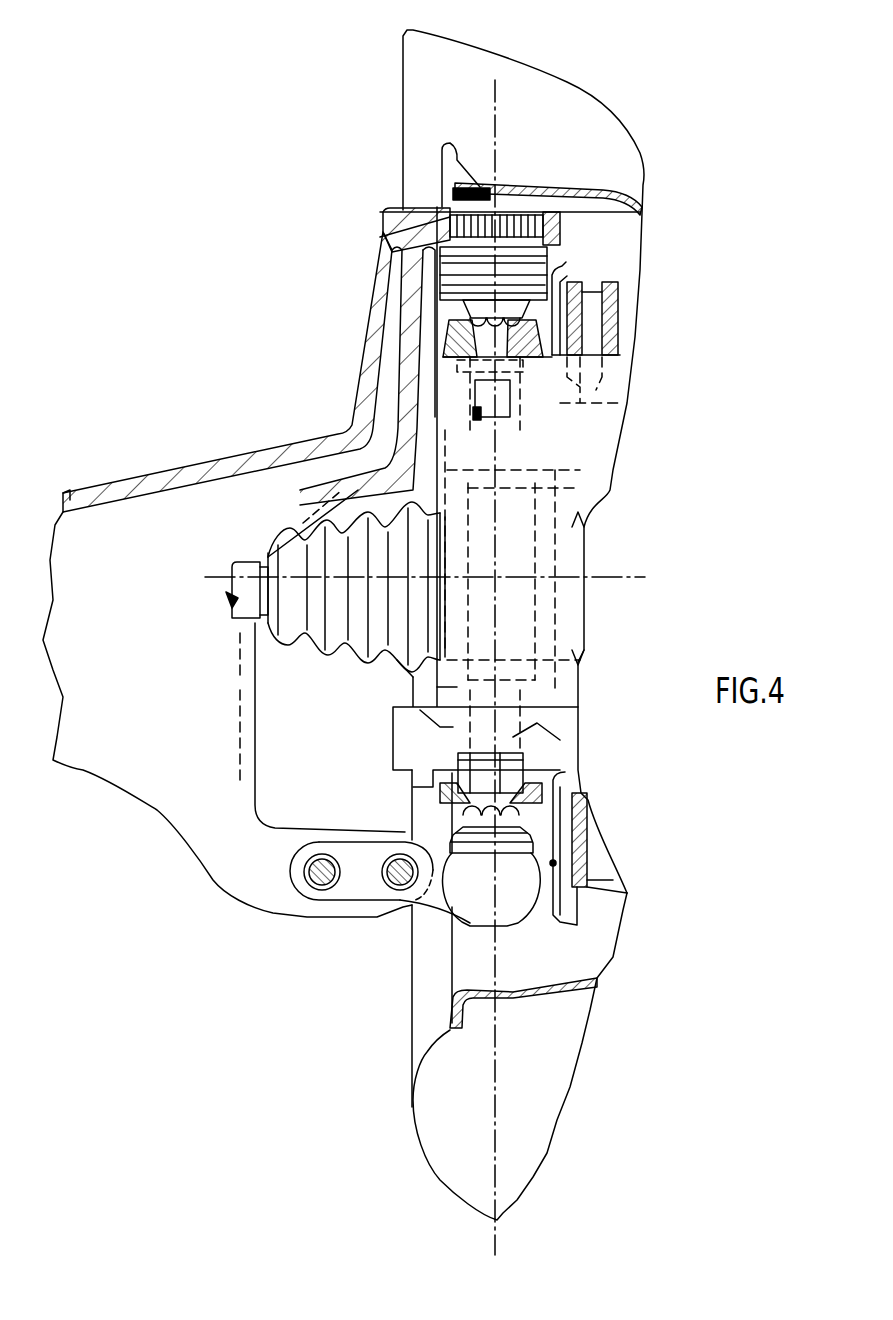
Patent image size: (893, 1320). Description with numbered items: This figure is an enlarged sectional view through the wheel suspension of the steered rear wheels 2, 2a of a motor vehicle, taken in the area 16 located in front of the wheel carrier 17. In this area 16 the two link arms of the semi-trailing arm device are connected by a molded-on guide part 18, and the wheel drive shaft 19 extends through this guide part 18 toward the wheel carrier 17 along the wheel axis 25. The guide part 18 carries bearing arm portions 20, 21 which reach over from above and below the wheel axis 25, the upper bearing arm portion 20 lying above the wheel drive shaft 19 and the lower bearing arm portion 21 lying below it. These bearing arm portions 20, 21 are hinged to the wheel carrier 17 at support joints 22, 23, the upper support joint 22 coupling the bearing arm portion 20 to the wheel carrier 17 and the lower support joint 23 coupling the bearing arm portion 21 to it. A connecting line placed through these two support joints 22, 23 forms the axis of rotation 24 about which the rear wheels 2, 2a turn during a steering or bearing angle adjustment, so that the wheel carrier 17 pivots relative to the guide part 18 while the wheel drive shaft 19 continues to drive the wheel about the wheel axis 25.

The rear wheel 2 is at (528, 1056).
The rear wheel 2a is at (543, 1032).
The area 16 is at (197, 425).
The wheel carrier 17 is at (523, 427).
The guide part 18 is at (103, 723).
The wheel drive shaft 19 is at (233, 605).
The bearing arm portion 20 is at (383, 230).
The bearing arm portion 21 is at (358, 902).
The support joint 22 is at (563, 272).
The support joint 23 is at (507, 887).
The axis of rotation 24 is at (493, 1113).
The wheel axis 25 is at (643, 577).